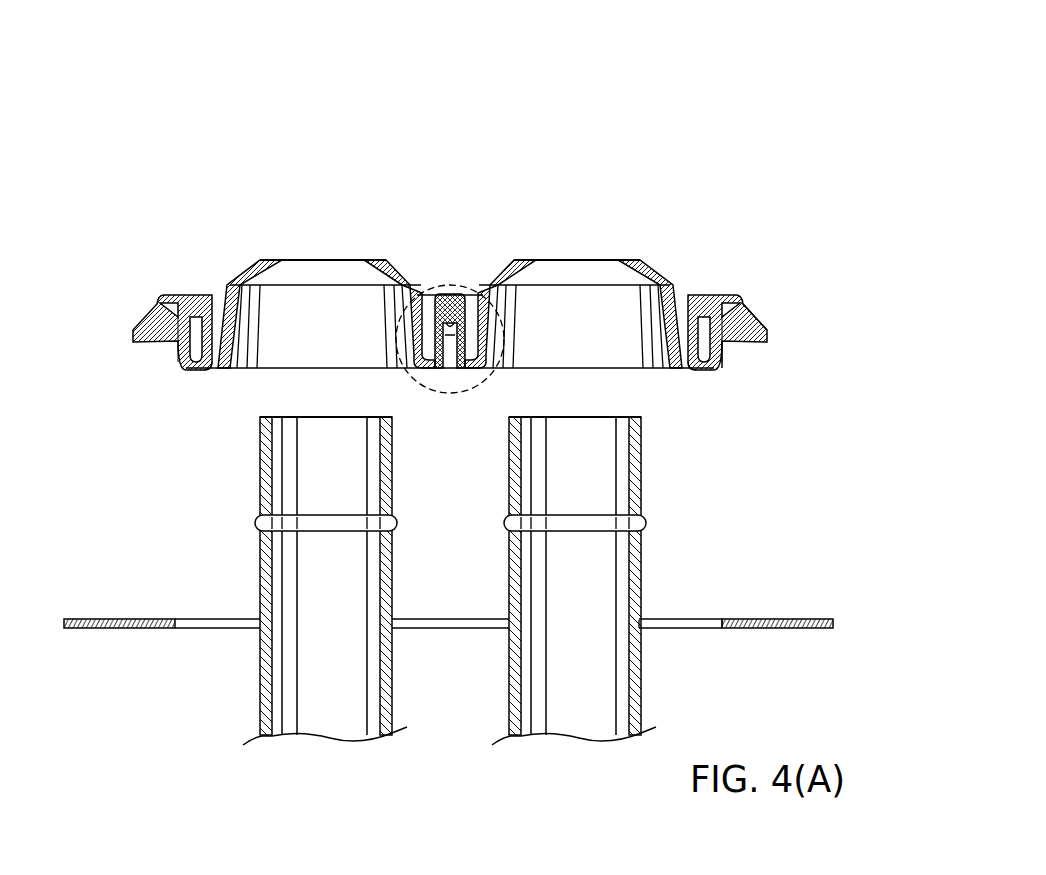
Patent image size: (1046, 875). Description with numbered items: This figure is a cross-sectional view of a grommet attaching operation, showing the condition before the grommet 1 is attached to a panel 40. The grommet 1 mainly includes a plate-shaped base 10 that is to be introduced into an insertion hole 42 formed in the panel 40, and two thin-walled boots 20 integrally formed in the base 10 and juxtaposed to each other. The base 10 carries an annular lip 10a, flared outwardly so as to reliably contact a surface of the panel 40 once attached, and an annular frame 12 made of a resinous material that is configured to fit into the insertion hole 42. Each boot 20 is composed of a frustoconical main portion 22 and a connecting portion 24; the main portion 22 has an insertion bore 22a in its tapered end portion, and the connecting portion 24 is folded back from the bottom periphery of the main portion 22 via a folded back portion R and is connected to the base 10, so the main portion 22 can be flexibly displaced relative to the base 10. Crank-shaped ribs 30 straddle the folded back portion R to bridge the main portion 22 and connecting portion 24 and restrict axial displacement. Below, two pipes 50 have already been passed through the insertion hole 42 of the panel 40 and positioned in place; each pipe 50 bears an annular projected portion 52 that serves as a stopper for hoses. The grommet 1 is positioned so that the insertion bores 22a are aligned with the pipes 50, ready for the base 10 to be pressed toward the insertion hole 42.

The grommet 1 is at (776, 77).
The base 10 is at (731, 295).
The annular lip 10a is at (752, 322).
The annular frame 12 is at (724, 348).
The boot 20 is at (255, 190).
The main portion 22 is at (216, 312).
The insertion bore 22a is at (316, 260).
The connecting portion 24 is at (212, 300).
The rib 30 is at (421, 290).
The panel 40 is at (803, 618).
The insertion hole 42 is at (720, 630).
The pipe 50 is at (259, 571).
The projected portion 52 is at (504, 521).
The folded back portion R is at (218, 369).